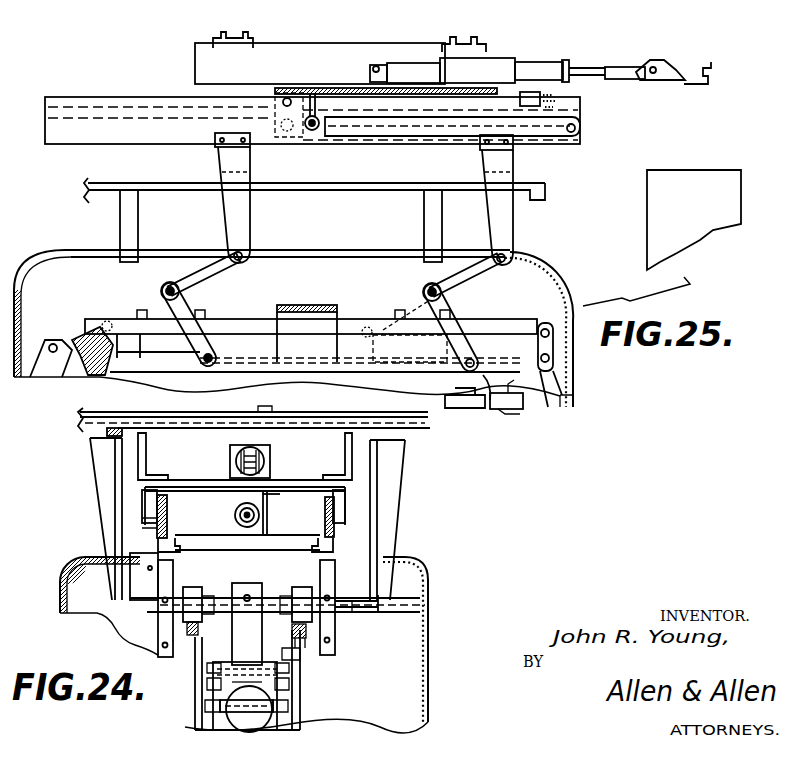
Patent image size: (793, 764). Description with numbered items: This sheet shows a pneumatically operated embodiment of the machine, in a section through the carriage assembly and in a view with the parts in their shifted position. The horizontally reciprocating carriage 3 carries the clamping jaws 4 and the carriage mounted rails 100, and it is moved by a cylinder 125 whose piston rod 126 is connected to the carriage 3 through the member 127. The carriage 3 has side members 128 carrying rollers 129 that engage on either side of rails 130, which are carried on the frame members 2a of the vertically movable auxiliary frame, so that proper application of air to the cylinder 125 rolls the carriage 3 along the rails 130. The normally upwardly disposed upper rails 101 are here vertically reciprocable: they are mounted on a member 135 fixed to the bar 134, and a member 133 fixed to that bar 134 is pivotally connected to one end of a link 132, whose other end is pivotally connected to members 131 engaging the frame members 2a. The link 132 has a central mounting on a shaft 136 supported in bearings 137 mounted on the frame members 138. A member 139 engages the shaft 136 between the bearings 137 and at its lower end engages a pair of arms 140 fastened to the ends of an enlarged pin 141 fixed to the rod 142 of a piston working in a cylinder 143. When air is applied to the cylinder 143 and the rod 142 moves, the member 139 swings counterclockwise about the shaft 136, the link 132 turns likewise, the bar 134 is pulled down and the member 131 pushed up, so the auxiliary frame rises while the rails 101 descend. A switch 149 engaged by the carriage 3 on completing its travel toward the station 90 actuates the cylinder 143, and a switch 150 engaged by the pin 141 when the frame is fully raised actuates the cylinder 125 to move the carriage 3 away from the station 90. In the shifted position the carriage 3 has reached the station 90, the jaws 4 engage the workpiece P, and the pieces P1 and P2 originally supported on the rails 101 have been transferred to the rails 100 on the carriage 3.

In FIG. 25, the frame members 2a is at (144, 97).
In FIG. 24, the frame members 2a is at (165, 504).
In FIG. 25, the carriage 3 is at (332, 88).
In FIG. 24, the carriage 3 is at (198, 480).
In FIG. 25, the clamping jaws 4 is at (668, 64).
In FIG. 24, the clamping jaws 4 is at (263, 453).
In FIG. 25, the station 90 is at (730, 200).
In FIG. 25, the carriage mounted rails 100 is at (366, 52).
In FIG. 24, the carriage mounted rails 100 is at (147, 443).
In FIG. 25, the upper rails 101 is at (161, 184).
In FIG. 24, the upper rails 101 is at (139, 409).
In FIG. 25, the cylinder 125 is at (406, 128).
In FIG. 24, the cylinder 125 is at (234, 515).
In FIG. 24, the rod 126 is at (250, 528).
In FIG. 24, the member 127 is at (268, 505).
In FIG. 24, the side members 128 is at (139, 496).
In FIG. 24, the rollers 129 is at (143, 521).
In FIG. 24, the rails 130 is at (168, 513).
In FIG. 25, the members 131 is at (244, 172).
In FIG. 24, the members 131 is at (303, 596).
In FIG. 25, the link 132 is at (241, 262).
In FIG. 24, the link 132 is at (343, 633).
In FIG. 25, the member 133 is at (375, 340).
In FIG. 24, the member 133 is at (355, 598).
In FIG. 25, the bar 134 is at (162, 356).
In FIG. 24, the bar 134 is at (352, 613).
In FIG. 25, the member 135 is at (139, 221).
In FIG. 24, the member 135 is at (378, 495).
In FIG. 25, the shaft 136 is at (180, 291).
In FIG. 24, the shaft 136 is at (273, 601).
In FIG. 25, the bearings 137 is at (212, 312).
In FIG. 24, the bearings 137 is at (300, 641).
In FIG. 25, the frame members 138 is at (340, 318).
In FIG. 24, the frame members 138 is at (295, 662).
In FIG. 25, the member 139 is at (193, 351).
In FIG. 24, the member 139 is at (240, 606).
In FIG. 25, the arms 140 is at (402, 372).
In FIG. 24, the arms 140 is at (230, 695).
In FIG. 25, the enlarged pin 141 is at (483, 372).
In FIG. 24, the enlarged pin 141 is at (291, 718).
In FIG. 24, the rod 142 is at (213, 710).
In FIG. 24, the cylinder 143 is at (238, 694).
In FIG. 25, the switch 149 is at (582, 116).
In FIG. 25, the switch 150 is at (512, 409).
In FIG. 25, the workpiece P is at (706, 72).
In FIG. 25, the piece P1 is at (464, 35).
In FIG. 24, the piece P1 is at (266, 414).
In FIG. 25, the piece P2 is at (256, 30).